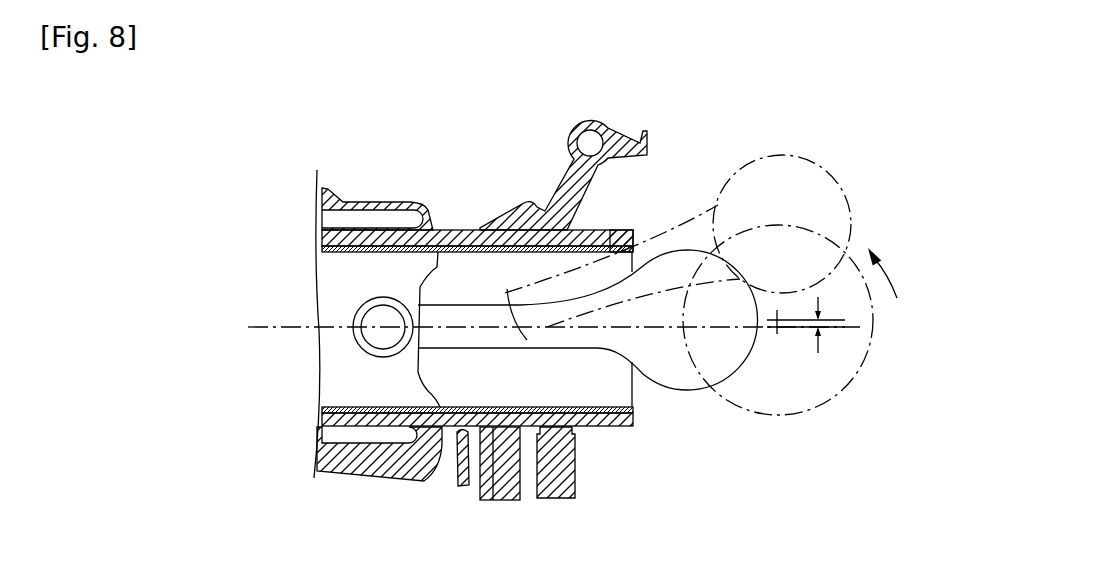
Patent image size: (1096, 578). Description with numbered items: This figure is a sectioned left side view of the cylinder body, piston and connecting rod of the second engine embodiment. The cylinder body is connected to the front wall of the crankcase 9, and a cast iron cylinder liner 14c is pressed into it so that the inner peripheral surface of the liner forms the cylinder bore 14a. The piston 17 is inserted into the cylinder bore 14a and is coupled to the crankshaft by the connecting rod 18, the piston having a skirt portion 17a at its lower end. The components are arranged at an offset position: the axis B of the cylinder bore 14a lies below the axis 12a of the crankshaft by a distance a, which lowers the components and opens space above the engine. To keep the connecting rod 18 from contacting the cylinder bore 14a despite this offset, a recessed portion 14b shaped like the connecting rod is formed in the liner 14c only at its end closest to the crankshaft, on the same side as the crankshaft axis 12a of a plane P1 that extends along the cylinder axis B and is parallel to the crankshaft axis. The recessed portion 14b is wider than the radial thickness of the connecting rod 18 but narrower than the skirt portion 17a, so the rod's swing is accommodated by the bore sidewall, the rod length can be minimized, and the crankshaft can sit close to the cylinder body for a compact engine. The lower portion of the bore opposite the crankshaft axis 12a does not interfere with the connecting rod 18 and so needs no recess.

The crankcase 9 is at (567, 130).
The axis of the crankshaft 12a is at (773, 326).
The cylinder bore 14a is at (464, 242).
The recessed portion 14b is at (624, 236).
The cylinder liner 14c is at (318, 250).
The piston 17 is at (336, 297).
The skirt portion of the piston 17a is at (428, 262).
The connecting rod 18 is at (687, 250).
The plane P1 is at (670, 329).
The axis of the cylinder bore B is at (827, 318).
The offset distance a is at (828, 318).